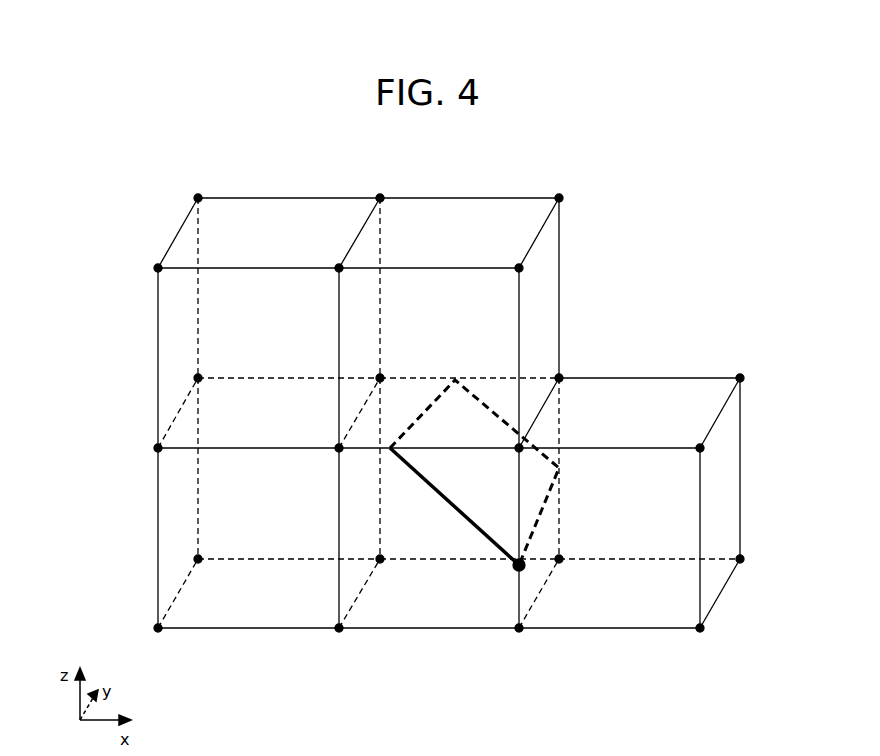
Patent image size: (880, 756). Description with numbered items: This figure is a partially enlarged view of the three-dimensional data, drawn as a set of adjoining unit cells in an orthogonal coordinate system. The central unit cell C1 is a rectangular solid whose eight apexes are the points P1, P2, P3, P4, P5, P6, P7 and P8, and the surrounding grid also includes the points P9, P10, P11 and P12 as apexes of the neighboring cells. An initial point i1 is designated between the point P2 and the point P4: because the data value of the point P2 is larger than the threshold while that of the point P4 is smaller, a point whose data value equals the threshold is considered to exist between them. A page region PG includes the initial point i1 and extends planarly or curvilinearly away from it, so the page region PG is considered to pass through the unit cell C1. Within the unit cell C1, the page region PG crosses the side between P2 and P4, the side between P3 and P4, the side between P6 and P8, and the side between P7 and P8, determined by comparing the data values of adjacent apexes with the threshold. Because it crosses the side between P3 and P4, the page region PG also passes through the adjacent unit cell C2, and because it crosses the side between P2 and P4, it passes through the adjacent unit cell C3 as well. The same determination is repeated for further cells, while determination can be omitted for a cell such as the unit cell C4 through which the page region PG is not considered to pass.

The unit cell C1 is at (435, 630).
The unit cell C2 is at (467, 197).
The unit cell C3 is at (627, 630).
The unit cell C4 is at (236, 630).
The point P1 is at (325, 639).
The point P2 is at (505, 639).
The point P3 is at (325, 463).
The point P4 is at (505, 463).
The point P5 is at (394, 571).
The point P6 is at (574, 571).
The point P7 is at (394, 365).
The point P8 is at (574, 365).
The point P9 is at (325, 281).
The point P10 is at (500, 281).
The point P11 is at (401, 185).
The point P12 is at (580, 185).
The page region PG is at (471, 520).
The initial point i1 is at (523, 568).